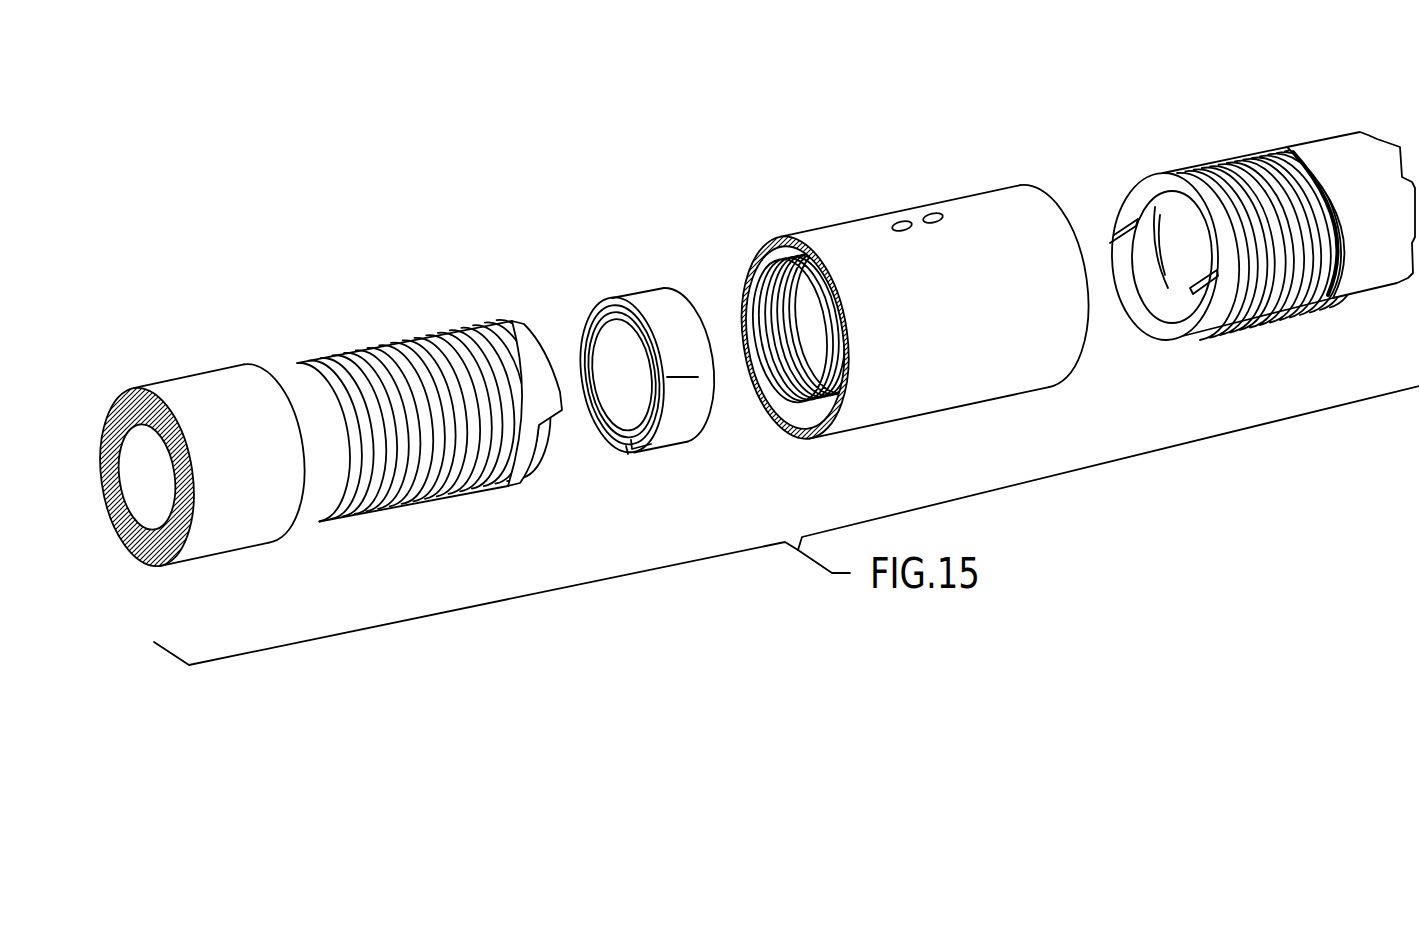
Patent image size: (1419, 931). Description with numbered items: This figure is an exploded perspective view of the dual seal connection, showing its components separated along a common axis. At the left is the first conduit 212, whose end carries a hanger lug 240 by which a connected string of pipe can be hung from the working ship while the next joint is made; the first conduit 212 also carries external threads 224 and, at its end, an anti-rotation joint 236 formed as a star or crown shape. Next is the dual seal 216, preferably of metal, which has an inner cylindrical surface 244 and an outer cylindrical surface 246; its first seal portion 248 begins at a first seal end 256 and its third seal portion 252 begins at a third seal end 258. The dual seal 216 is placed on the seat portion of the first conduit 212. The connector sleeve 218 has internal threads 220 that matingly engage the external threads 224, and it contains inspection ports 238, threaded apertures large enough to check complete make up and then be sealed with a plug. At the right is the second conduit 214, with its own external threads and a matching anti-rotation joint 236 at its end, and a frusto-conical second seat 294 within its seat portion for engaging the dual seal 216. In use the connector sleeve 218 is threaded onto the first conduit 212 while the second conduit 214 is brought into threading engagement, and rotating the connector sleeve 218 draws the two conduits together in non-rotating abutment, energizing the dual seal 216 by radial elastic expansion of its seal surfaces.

The first conduit 212 is at (325, 406).
The hanger lug 240 is at (202, 446).
The external threads 224 is at (423, 404).
The anti-rotation joint 236 is at (863, 338).
The dual seal 216 is at (635, 396).
The first seal end 256 is at (594, 340).
The first seal portion 248 is at (666, 398).
The inner cylindrical surface 244 is at (599, 410).
The third seal end 258 is at (675, 479).
The third seal portion 252 is at (615, 503).
The outer cylindrical surface 246 is at (682, 361).
The connector sleeve 218 is at (895, 285).
The internal threads 220 is at (785, 306).
The inspection ports 238 is at (884, 189).
The second conduit 214 is at (1247, 202).
The second seat 294 is at (1124, 196).